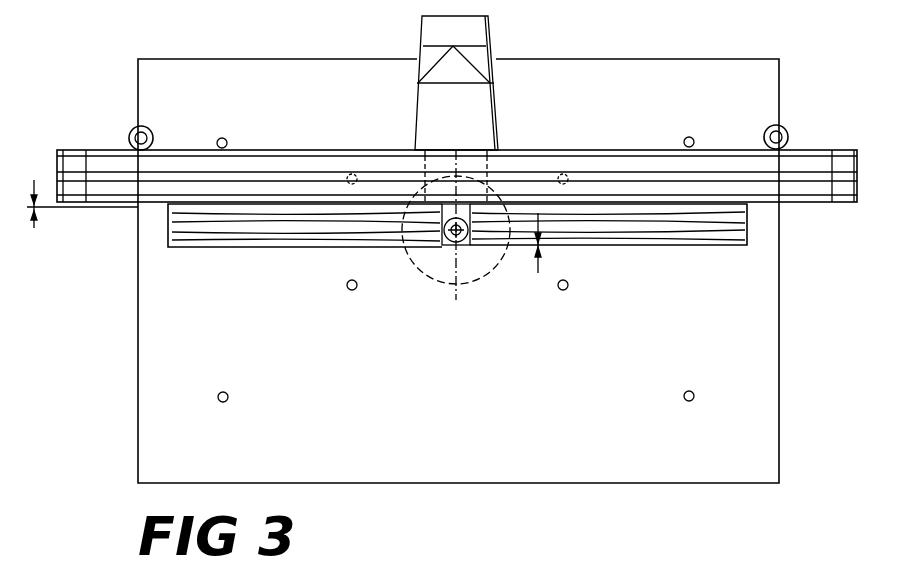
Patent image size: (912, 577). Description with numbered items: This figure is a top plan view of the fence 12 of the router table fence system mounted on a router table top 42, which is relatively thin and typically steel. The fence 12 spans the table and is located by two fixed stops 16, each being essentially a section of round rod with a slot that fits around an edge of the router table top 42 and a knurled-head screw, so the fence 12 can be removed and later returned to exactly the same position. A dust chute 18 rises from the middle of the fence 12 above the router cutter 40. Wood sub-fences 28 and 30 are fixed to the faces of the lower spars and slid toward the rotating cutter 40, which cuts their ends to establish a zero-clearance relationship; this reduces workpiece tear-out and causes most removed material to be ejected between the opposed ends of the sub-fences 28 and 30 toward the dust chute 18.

The fence 12 is at (703, 160).
The fixed stop 16 is at (133, 127).
The dust chute 18 is at (428, 123).
The sub-fence 28 is at (293, 238).
The sub-fence 30 is at (612, 243).
The router cutter 40 is at (460, 238).
The router table top 42 is at (532, 468).